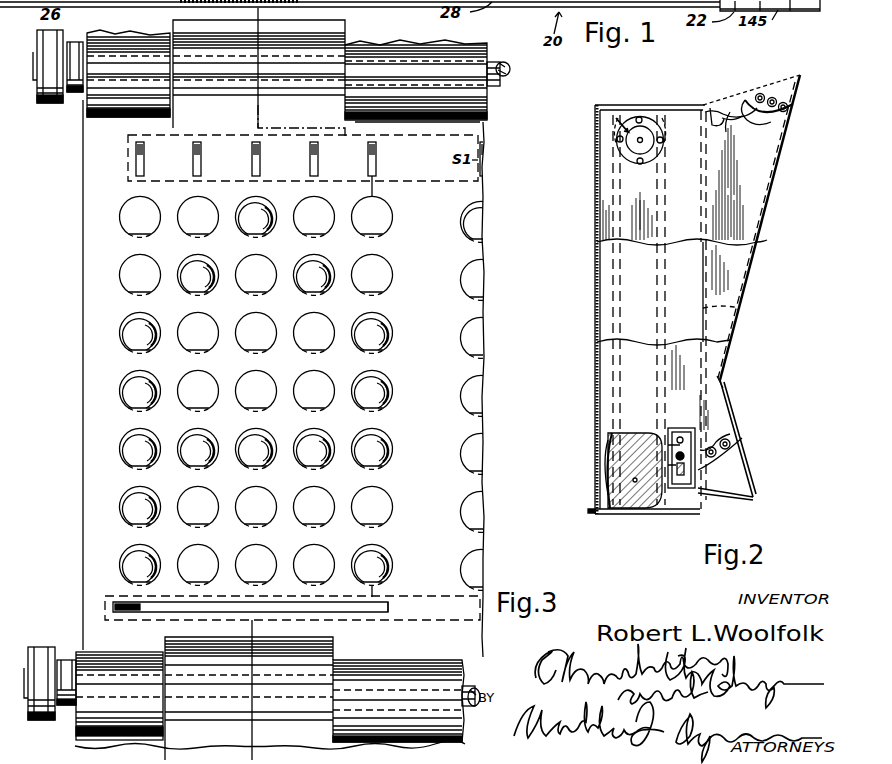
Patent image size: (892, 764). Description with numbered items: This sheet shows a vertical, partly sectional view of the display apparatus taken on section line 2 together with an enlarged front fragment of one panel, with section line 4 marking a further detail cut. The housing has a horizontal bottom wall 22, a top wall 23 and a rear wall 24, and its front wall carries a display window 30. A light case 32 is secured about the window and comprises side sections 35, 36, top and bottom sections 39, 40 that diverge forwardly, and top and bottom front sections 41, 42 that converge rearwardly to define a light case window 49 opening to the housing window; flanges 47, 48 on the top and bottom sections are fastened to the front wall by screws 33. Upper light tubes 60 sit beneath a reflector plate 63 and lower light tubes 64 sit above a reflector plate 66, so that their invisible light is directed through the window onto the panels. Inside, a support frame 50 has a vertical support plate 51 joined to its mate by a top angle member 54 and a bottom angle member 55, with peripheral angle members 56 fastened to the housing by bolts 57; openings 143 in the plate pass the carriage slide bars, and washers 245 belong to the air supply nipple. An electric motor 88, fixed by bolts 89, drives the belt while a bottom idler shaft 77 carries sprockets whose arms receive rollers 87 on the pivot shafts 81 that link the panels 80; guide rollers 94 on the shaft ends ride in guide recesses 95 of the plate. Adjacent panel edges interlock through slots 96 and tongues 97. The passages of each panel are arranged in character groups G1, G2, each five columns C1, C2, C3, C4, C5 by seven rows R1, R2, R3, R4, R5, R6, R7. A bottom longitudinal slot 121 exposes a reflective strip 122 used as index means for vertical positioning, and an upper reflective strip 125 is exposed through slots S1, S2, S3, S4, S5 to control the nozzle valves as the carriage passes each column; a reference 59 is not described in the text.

In FIG. 3, the section line 2— 2 is at (130, 26).
In FIG. 3, the section line 4— 4 is at (270, 13).
In FIG. 2, the bottom wall 22 is at (638, 514).
In FIG. 2, the top wall 23 is at (642, 114).
In FIG. 2, the rear wall 24 is at (605, 284).
In FIG. 2, the display window 30 is at (742, 310).
In FIG. 2, the light case 32 is at (733, 91).
In FIG. 2, the screws 33 is at (700, 498).
In FIG. 2, the side section 35 is at (738, 280).
In FIG. 2, the side section 36 is at (736, 486).
In FIG. 2, the top section 39 is at (772, 90).
In FIG. 2, the bottom section 40 is at (742, 506).
In FIG. 2, the top front section 41 is at (796, 110).
In FIG. 2, the bottom front section 42 is at (742, 472).
In FIG. 2, the flange 47 is at (722, 108).
In FIG. 2, the flange 48 is at (700, 512).
In FIG. 2, the light case window 49 is at (758, 240).
In FIG. 2, the support frame 50 is at (606, 189).
In FIG. 2, the support plate 51 is at (600, 222).
In FIG. 2, the top angle member 54 is at (614, 105).
In FIG. 2, the bottom angle member 55 is at (602, 516).
In FIG. 2, the peripheral angle member 56 is at (598, 122).
In FIG. 2, the bolts 57 is at (695, 108).
In FIG. 2, the cover edge 59 is at (760, 206).
In FIG. 2, the light tubes 60 is at (790, 118).
In FIG. 2, the reflector plate 63 is at (794, 84).
In FIG. 2, the light tubes 64 is at (732, 438).
In FIG. 2, the reflector plate 66 is at (728, 450).
In FIG. 2, the bottom idler shaft 77 is at (632, 482).
In FIG. 3, the panels 80 is at (62, 455).
In FIG. 3, the pivot shafts 81 is at (504, 62).
In FIG. 3, the rollers 87 is at (76, 96).
In FIG. 2, the electric motor 88 is at (626, 145).
In FIG. 2, the bolts 89 is at (612, 128).
In FIG. 3, the guide rollers 94 is at (56, 100).
In FIG. 2, the guide recesses 95 is at (618, 460).
In FIG. 3, the slots 96 is at (368, 39).
In FIG. 3, the tongues 97 is at (317, 34).
In FIG. 3, the bottom longitudinal slot 121 is at (388, 602).
In FIG. 3, the reflective strip 122 is at (391, 612).
In FIG. 3, the reflective strip 125 is at (176, 136).
In FIG. 2, the openings 143 is at (694, 410).
In FIG. 2, the washers 245 is at (600, 506).
In FIG. 3, the slot S1 is at (136, 160).
In FIG. 3, the slot S2 is at (193, 160).
In FIG. 3, the slot S3 is at (252, 160).
In FIG. 3, the slot S4 is at (310, 160).
In FIG. 3, the slot S5 is at (368, 160).
In FIG. 3, the column C1 is at (116, 196).
In FIG. 3, the column C2 is at (170, 190).
In FIG. 3, the column C3 is at (227, 194).
In FIG. 3, the column C4 is at (288, 196).
In FIG. 3, the column C5 is at (345, 196).
In FIG. 3, the row R1 is at (120, 221).
In FIG. 3, the row R2 is at (122, 286).
In FIG. 3, the row R3 is at (120, 348).
In FIG. 3, the row R4 is at (241, 390).
In FIG. 3, the row R5 is at (119, 463).
In FIG. 3, the row R6 is at (118, 511).
In FIG. 3, the row R7 is at (117, 566).
In FIG. 3, the character group G1 is at (55, 312).
In FIG. 3, the character group G2 is at (432, 392).